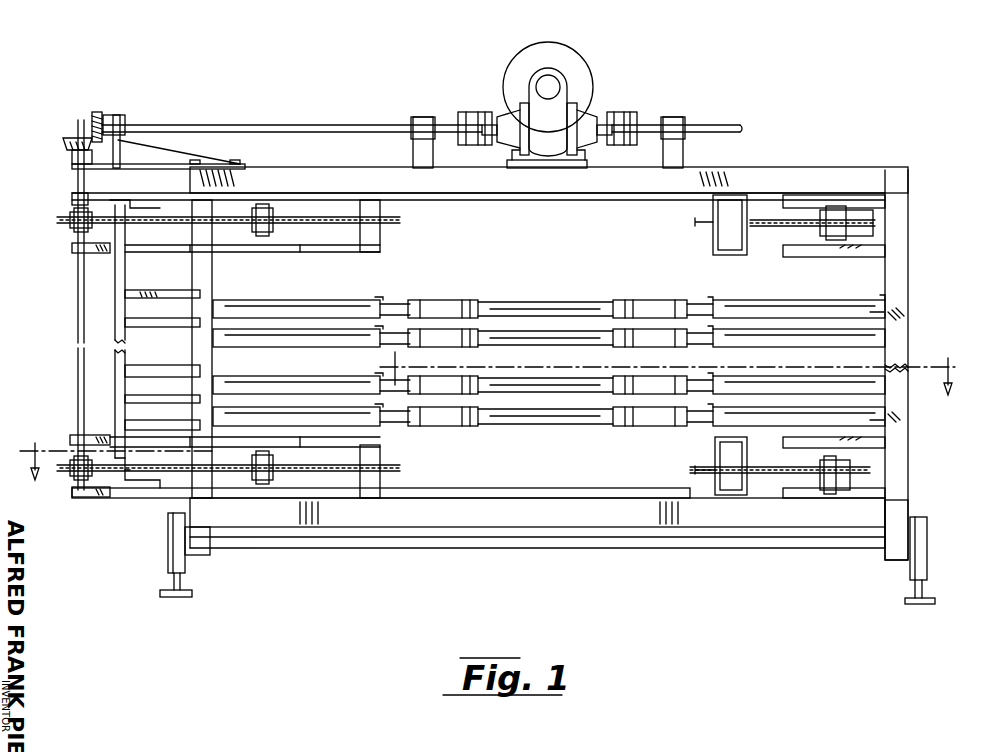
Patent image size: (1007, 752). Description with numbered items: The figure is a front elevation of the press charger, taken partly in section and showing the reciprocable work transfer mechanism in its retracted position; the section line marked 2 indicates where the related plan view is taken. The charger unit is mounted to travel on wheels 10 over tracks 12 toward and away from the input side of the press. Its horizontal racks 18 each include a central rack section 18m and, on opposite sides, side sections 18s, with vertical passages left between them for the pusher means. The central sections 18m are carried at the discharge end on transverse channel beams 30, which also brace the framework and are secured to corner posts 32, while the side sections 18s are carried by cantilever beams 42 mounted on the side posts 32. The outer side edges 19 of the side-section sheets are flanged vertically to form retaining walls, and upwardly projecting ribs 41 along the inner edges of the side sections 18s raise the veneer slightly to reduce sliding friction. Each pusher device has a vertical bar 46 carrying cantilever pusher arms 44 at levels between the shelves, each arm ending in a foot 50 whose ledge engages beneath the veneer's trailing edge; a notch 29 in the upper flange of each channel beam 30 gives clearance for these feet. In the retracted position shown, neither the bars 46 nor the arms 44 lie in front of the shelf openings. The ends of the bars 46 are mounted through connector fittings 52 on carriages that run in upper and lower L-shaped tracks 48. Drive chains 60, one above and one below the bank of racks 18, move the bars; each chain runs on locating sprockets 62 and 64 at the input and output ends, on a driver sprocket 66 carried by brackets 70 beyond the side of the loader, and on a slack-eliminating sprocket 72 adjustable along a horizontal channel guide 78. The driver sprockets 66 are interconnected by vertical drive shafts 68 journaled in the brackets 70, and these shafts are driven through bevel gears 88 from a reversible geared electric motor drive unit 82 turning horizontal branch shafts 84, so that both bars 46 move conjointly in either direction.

The wheels 10 is at (168, 552).
The tracks 12 is at (170, 580).
The racks 18 is at (529, 435).
The side sections 18s is at (290, 300).
The central rack section 18m is at (540, 378).
The outer side edges 19 is at (878, 293).
The notch 29 is at (397, 298).
The channel beams 30 is at (405, 300).
The corner posts 32 is at (212, 270).
The ribs 41 is at (378, 297).
The cantilever beams 42 is at (892, 311).
The pusher arms 44 is at (152, 328).
The vertical bar 46 is at (125, 268).
The L-shaped tracks 48 is at (145, 198).
The foot 50 is at (194, 308).
The connector fittings 52 is at (115, 200).
The drive chains 60 is at (309, 223).
The sprocket 62 is at (380, 216).
The sprocket 64 is at (708, 230).
The sprockets 66 is at (70, 215).
The vertical drive shafts 68 is at (78, 308).
The brackets 70 is at (72, 196).
The sprocket 72 is at (252, 228).
The horizontal channel guide 78 is at (810, 195).
The electric motor drive unit 82 is at (590, 77).
The horizontal branch shafts 84 is at (490, 116).
The bevel gears 88 is at (89, 120).
The section line 2- 2 is at (493, 414).